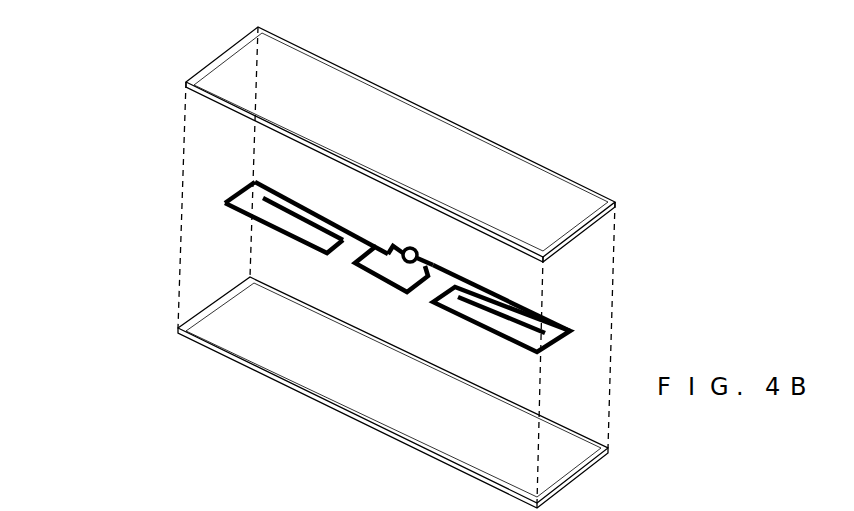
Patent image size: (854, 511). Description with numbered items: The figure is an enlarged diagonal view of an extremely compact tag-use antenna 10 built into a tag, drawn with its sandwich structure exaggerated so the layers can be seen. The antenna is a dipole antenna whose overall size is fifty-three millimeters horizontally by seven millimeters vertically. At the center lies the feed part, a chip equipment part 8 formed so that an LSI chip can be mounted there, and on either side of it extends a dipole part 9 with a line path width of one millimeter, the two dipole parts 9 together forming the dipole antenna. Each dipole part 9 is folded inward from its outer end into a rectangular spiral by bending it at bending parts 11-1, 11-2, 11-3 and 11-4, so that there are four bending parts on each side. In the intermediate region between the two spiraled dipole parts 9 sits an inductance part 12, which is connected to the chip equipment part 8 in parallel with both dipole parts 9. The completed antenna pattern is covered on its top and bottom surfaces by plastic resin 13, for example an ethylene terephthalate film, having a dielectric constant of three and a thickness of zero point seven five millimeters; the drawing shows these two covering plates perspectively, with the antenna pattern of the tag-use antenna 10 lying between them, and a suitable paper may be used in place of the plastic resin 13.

The chip equipment part 8 is at (483, 230).
The dipole part 9 is at (375, 139).
The tag-use antenna 10 is at (322, 265).
The bending part 11-1 is at (431, 240).
The bending part 11-2 is at (256, 329).
The bending part 11-3 is at (183, 309).
The bending part 11-4 is at (349, 132).
The inductance part 12 is at (335, 351).
The plastic resin 13 is at (222, 318).